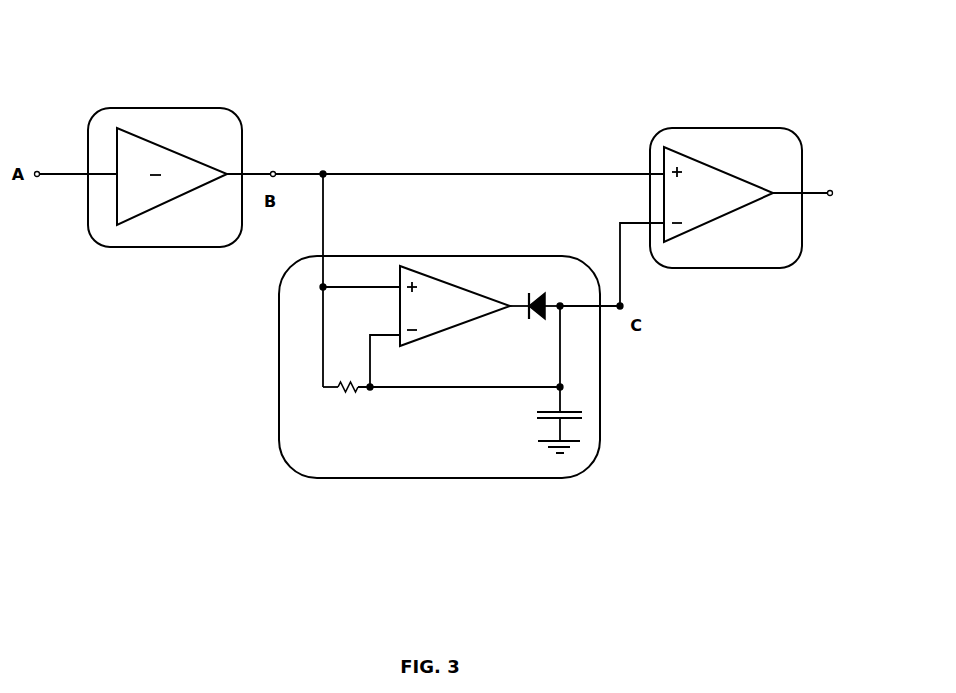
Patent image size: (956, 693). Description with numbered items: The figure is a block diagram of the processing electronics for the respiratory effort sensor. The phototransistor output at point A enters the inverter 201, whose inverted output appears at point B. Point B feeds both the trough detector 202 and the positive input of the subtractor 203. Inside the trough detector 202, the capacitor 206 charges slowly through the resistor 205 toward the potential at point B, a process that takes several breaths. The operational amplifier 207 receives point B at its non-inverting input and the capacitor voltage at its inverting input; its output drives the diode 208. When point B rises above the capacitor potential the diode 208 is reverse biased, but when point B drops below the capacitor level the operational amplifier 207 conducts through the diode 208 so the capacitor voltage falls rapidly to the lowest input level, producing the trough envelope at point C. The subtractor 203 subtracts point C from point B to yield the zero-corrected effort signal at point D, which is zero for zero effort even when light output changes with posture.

The inverter 201 is at (122, 107).
The trough detector 202 is at (439, 405).
The subtractor 203 is at (695, 127).
The resistor 205 is at (344, 394).
The capacitor 206 is at (542, 417).
The operational amplifier 207 is at (458, 287).
The diode 208 is at (530, 322).